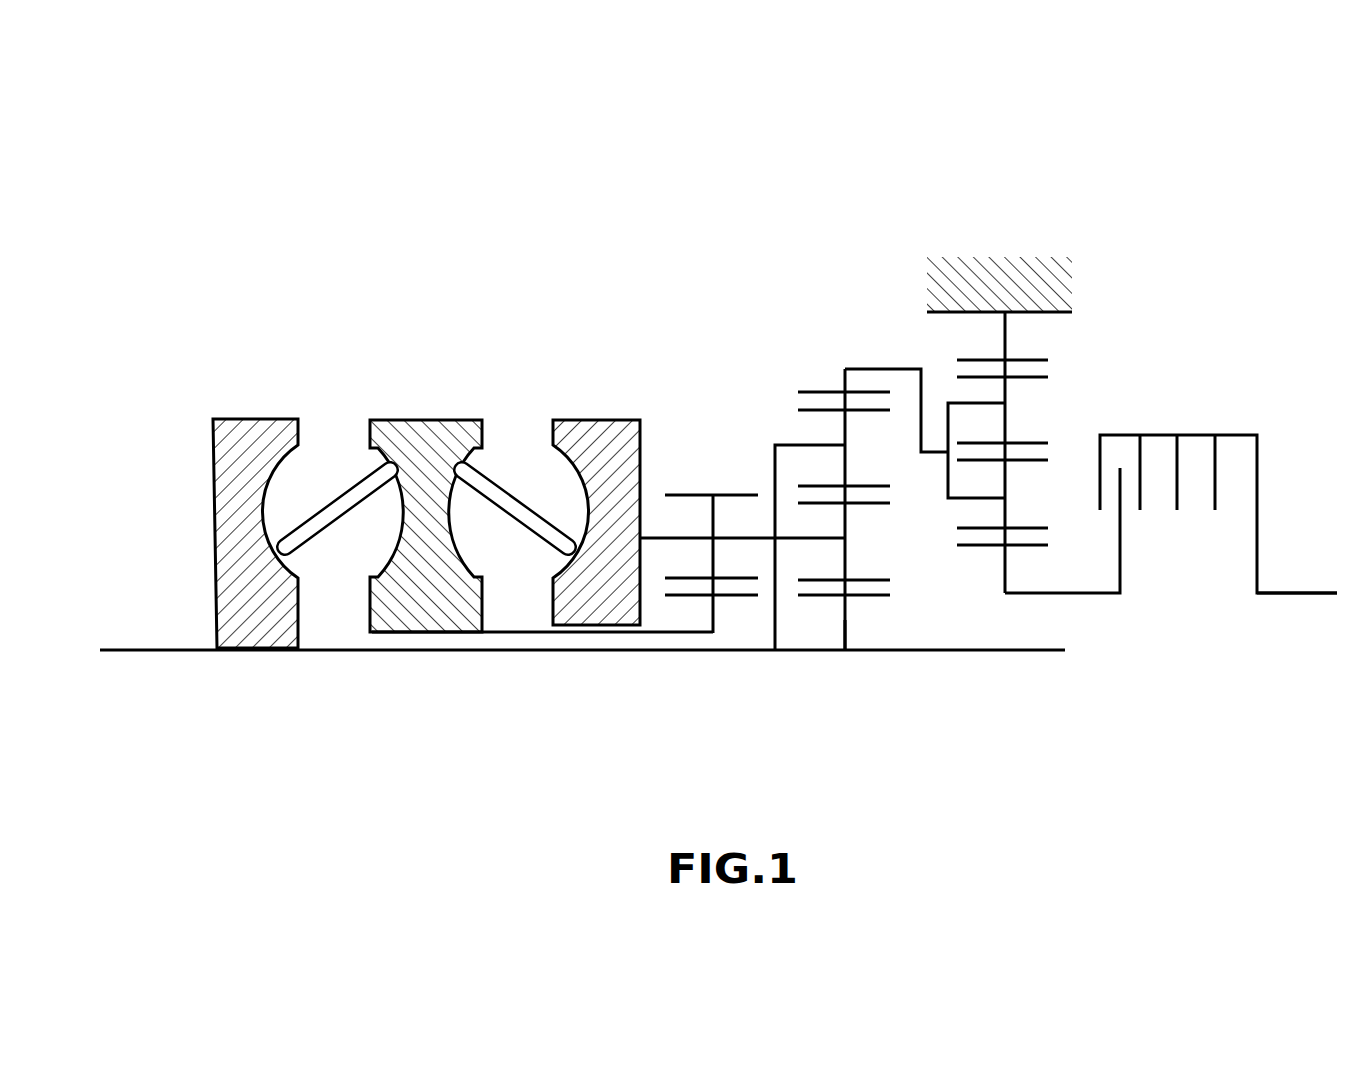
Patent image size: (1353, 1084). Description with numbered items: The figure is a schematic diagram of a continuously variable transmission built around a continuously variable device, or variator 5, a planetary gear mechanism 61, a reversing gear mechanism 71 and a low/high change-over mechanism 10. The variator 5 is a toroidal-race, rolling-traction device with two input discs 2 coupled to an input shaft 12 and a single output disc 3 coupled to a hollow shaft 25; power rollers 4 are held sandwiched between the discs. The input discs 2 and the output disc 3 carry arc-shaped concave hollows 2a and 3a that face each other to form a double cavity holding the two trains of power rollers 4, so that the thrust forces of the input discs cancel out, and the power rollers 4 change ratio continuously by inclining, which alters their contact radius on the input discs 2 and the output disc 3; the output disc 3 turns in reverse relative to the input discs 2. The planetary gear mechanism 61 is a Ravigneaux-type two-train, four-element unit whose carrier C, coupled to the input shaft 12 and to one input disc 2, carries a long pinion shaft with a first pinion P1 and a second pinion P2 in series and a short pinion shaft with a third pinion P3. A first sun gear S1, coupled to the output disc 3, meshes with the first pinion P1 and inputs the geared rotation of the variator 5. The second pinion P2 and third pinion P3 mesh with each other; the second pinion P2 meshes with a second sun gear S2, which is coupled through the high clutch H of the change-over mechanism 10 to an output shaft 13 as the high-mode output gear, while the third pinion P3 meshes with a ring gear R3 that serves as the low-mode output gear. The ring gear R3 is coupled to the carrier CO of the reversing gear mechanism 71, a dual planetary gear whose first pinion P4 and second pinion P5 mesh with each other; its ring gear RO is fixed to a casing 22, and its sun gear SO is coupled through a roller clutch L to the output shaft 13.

The input disc 2 is at (233, 418).
The concave hollow 2a is at (272, 482).
The output disc 3 is at (417, 418).
The concave hollow 3a is at (393, 527).
The power roller 4 is at (352, 500).
The continuously variable device 5 is at (380, 350).
The low/high change-over mechanism 10 is at (1289, 399).
The input shaft 12 is at (172, 652).
The output shaft 13 is at (1290, 592).
The casing 22 is at (978, 270).
The hollow shaft 25 is at (537, 633).
The planetary gear mechanism 61 is at (742, 338).
The reversing gear mechanism 71 is at (1025, 250).
The carrier C is at (770, 483).
The first pinion P1 is at (723, 493).
The second pinion P2 is at (852, 503).
The third pinion P3 is at (867, 413).
The first pinion P4 is at (1010, 517).
The second pinion P5 is at (1027, 382).
The ring gear R3 is at (822, 390).
The carrier CO is at (957, 402).
The ring gear RO is at (1025, 360).
The sun gear SO is at (1032, 550).
The first sun gear S1 is at (700, 598).
The second sun gear S2 is at (815, 598).
The roller clutch L is at (1135, 433).
The high clutch H is at (1238, 433).